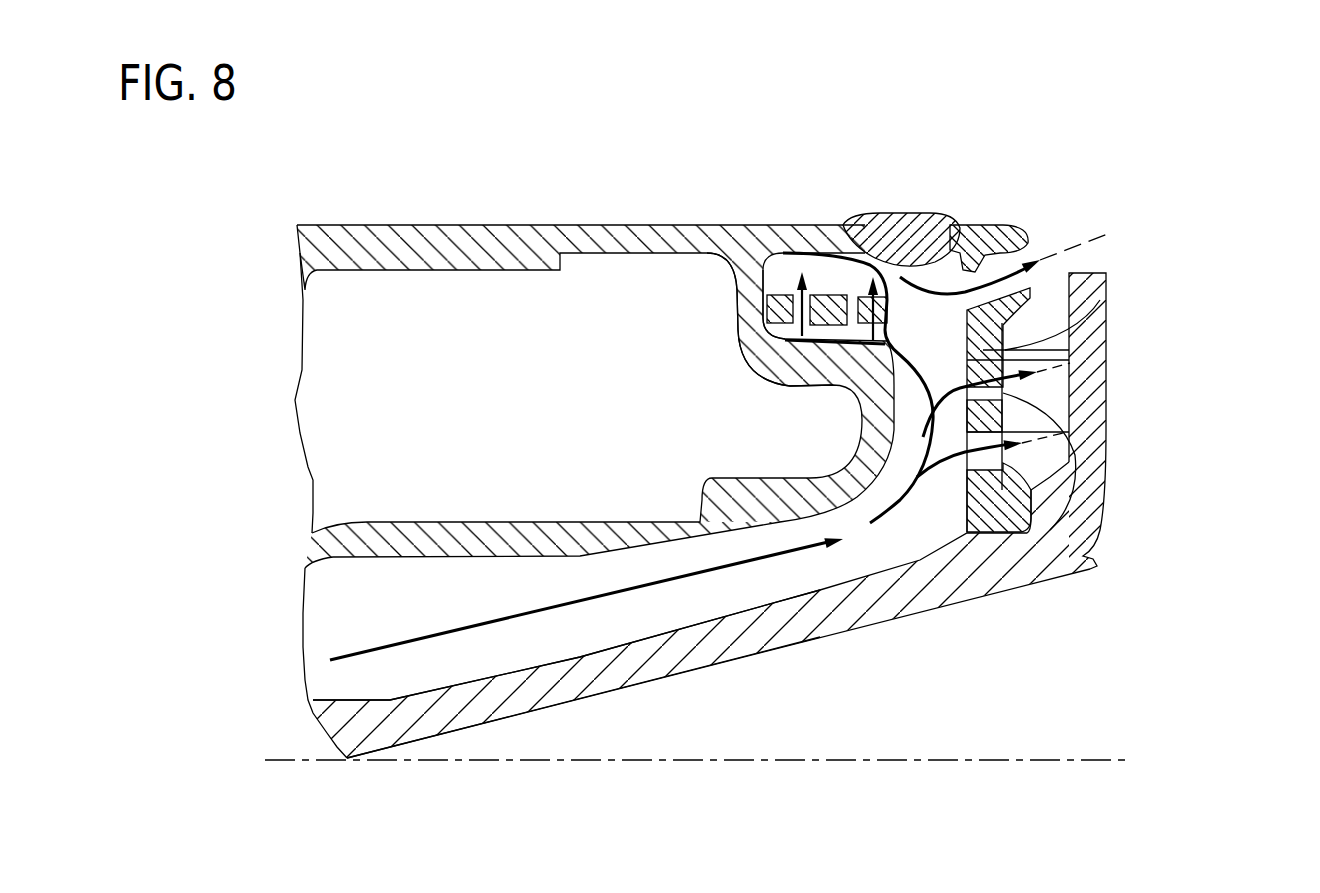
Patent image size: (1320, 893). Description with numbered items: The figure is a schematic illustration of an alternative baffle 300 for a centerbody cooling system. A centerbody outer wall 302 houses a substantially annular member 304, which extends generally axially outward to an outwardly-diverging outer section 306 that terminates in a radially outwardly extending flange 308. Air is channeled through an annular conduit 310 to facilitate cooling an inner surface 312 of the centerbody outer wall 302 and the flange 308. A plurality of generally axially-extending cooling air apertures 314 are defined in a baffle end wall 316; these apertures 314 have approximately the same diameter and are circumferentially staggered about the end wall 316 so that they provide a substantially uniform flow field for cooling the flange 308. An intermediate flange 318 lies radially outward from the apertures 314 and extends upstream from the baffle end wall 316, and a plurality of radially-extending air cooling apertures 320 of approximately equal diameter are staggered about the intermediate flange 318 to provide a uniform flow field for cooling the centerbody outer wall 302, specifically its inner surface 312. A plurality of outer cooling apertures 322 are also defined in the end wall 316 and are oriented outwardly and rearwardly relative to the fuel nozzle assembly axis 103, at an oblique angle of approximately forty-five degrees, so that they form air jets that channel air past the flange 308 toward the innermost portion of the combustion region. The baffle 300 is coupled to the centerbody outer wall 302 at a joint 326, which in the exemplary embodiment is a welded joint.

The fuel nozzle assembly axis 103 is at (1070, 759).
The baffle 300 is at (1036, 220).
The centerbody outer wall 302 is at (500, 238).
The annular member 304 is at (570, 688).
The outwardly-diverging outer section 306 is at (963, 588).
The flange 308 is at (1093, 383).
The annular conduit 310 is at (355, 628).
The inner surface 312 is at (843, 255).
The cooling air apertures 314 is at (1003, 467).
The baffle end wall 316 is at (1100, 300).
The intermediate flange 318 is at (707, 253).
The air cooling apertures 320 is at (770, 247).
The outer cooling apertures 322 is at (978, 224).
The joint 326 is at (904, 222).